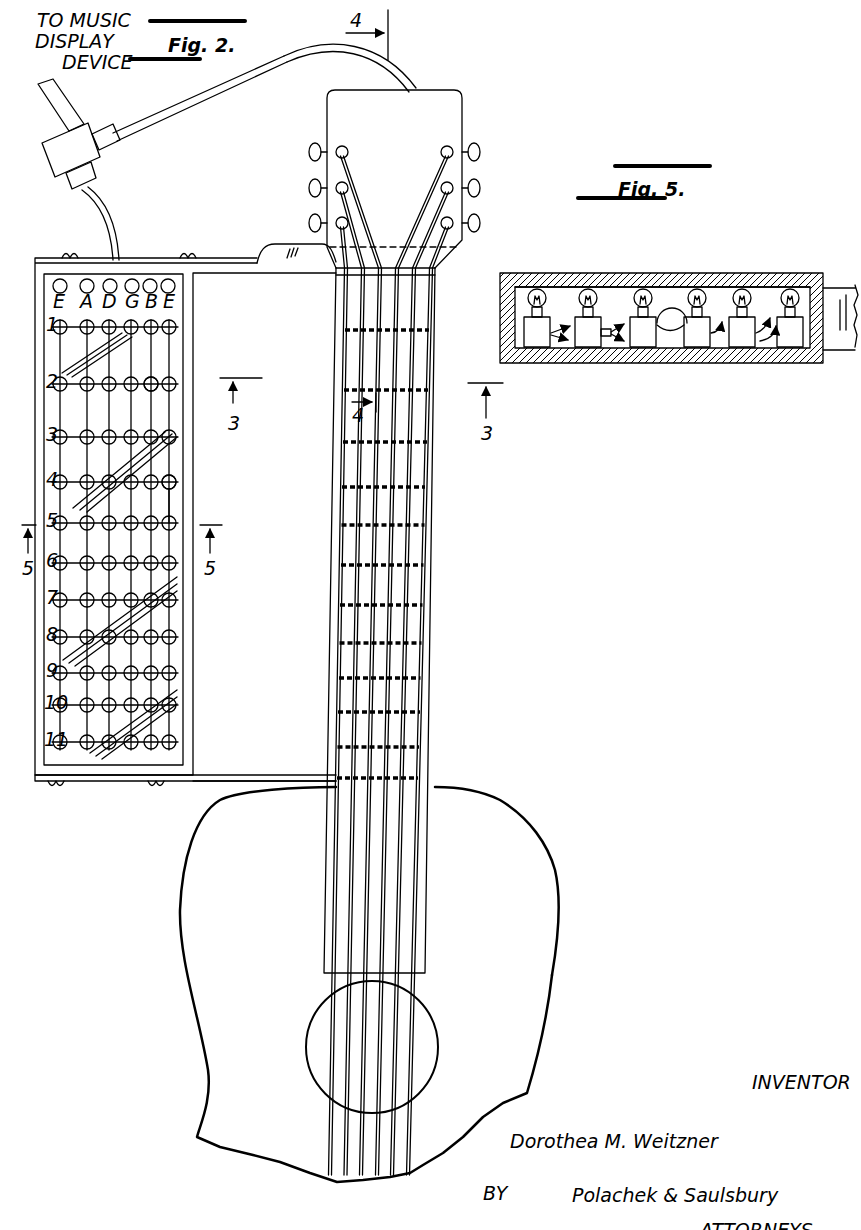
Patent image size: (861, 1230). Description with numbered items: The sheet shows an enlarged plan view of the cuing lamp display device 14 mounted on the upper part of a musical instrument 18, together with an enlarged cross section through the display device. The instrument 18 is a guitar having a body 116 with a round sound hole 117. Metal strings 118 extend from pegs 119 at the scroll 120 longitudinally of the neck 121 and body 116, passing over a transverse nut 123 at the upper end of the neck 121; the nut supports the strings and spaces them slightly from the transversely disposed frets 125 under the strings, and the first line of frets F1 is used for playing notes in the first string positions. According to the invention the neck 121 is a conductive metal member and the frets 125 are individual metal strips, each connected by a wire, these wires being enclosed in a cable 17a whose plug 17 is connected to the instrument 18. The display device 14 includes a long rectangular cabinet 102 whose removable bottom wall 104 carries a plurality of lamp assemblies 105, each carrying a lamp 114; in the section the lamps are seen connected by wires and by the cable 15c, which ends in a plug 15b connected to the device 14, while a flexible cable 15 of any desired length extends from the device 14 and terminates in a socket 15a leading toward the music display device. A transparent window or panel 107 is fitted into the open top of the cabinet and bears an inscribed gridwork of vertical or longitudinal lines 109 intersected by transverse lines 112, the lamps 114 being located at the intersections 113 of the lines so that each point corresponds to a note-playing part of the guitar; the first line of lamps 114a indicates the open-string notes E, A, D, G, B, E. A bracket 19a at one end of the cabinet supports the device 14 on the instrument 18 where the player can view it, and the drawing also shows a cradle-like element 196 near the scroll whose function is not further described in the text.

In FIG. 2, the flexible cable 15 is at (59, 103).
In FIG. 2, the socket 15a is at (102, 153).
In FIG. 2, the plug 15b is at (93, 172).
In FIG. 2, the cable 15c is at (104, 200).
In FIG. 5, the cable 15c is at (673, 303).
In FIG. 2, the plug 17 is at (100, 128).
In FIG. 2, the cable 17a is at (223, 95).
In FIG. 2, the cuing lamp display device 14 is at (199, 350).
In FIG. 2, the cradle 196 is at (248, 228).
In FIG. 2, the vertical or longitudinal lines 109 is at (171, 451).
In FIG. 2, the first line of lamps 114a is at (177, 285).
In FIG. 2, the intersections 113 is at (153, 378).
In FIG. 2, the lamp 114 is at (168, 480).
In FIG. 5, the lamp 114 is at (556, 248).
In FIG. 2, the transverse lines 112 is at (167, 489).
In FIG. 2, the transparent window or panel 107 is at (160, 578).
In FIG. 5, the transparent window or panel 107 is at (620, 244).
In FIG. 2, the cabinet 102 is at (112, 774).
In FIG. 2, the bracket 19a is at (217, 777).
In FIG. 2, the scroll 120 is at (445, 115).
In FIG. 2, the pegs 119 is at (453, 145).
In FIG. 2, the transverse nut 123 is at (415, 275).
In FIG. 2, the neck 121 is at (434, 507).
In FIG. 2, the metal strings 118 is at (421, 727).
In FIG. 2, the first line of frets F1 is at (419, 336).
In FIG. 2, the frets 125 is at (412, 642).
In FIG. 2, the musical instrument 18 is at (567, 878).
In FIG. 2, the body 116 is at (525, 972).
In FIG. 5, the body 116 is at (590, 337).
In FIG. 2, the round sound hole 117 is at (438, 1040).
In FIG. 5, the removable bottom wall 104 is at (582, 352).
In FIG. 5, the lamp assemblies 105 is at (608, 352).